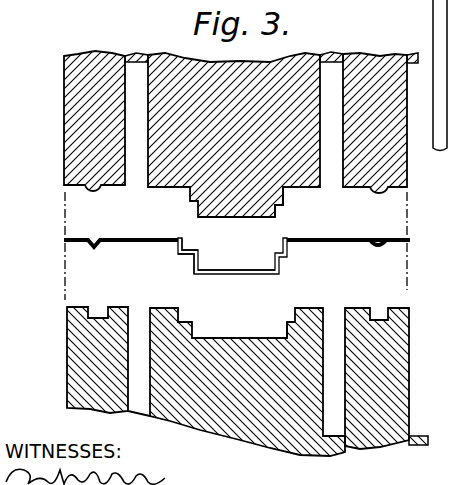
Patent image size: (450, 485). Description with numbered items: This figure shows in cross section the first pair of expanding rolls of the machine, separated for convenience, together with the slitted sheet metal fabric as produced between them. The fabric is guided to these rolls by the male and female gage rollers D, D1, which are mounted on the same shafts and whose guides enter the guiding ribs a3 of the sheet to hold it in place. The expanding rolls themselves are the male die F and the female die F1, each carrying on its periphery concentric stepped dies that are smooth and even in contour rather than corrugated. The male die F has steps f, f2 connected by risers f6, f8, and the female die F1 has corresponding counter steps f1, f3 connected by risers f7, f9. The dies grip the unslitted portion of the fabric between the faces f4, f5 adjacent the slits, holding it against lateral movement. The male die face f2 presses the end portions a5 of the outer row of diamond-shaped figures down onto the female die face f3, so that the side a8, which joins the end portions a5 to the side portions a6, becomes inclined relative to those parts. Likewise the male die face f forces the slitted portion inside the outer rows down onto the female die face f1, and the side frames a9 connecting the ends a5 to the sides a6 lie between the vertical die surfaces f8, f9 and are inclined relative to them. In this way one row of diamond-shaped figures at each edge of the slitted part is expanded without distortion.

The male gage roller D is at (64, 129).
The male die F is at (234, 135).
The female gage roller D1 is at (413, 362).
The female die F1 is at (252, 437).
The guiding ribs a3 is at (93, 243).
The end portions a5 is at (299, 243).
The side portions a6 is at (188, 257).
The side a8 is at (180, 249).
The side frames a9 is at (236, 259).
The male die step f is at (273, 214).
The female die counter step f1 is at (240, 338).
The male die step face f2 is at (289, 190).
The female die counter step face f3 is at (291, 322).
The male die gripping face f4 is at (164, 192).
The female die gripping face f5 is at (163, 307).
The male die riser f6 is at (285, 191).
The female die riser f7 is at (297, 309).
The male die riser f8 is at (281, 208).
The female die riser f9 is at (287, 331).